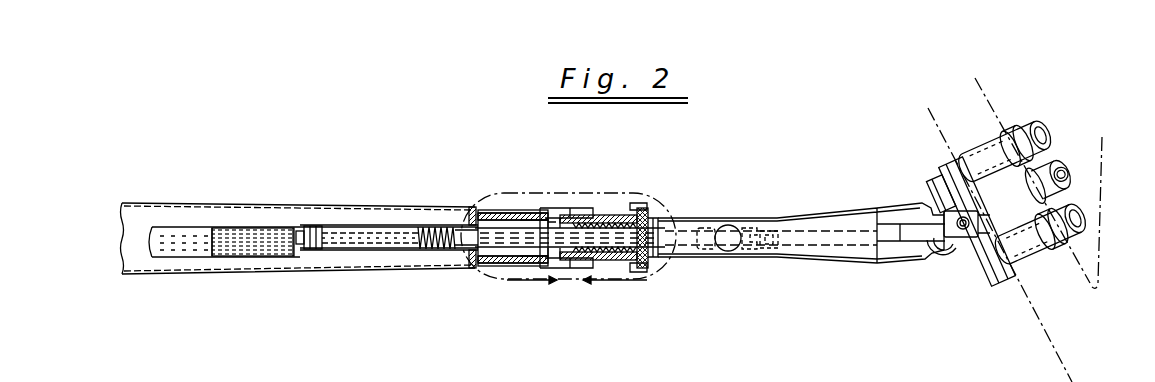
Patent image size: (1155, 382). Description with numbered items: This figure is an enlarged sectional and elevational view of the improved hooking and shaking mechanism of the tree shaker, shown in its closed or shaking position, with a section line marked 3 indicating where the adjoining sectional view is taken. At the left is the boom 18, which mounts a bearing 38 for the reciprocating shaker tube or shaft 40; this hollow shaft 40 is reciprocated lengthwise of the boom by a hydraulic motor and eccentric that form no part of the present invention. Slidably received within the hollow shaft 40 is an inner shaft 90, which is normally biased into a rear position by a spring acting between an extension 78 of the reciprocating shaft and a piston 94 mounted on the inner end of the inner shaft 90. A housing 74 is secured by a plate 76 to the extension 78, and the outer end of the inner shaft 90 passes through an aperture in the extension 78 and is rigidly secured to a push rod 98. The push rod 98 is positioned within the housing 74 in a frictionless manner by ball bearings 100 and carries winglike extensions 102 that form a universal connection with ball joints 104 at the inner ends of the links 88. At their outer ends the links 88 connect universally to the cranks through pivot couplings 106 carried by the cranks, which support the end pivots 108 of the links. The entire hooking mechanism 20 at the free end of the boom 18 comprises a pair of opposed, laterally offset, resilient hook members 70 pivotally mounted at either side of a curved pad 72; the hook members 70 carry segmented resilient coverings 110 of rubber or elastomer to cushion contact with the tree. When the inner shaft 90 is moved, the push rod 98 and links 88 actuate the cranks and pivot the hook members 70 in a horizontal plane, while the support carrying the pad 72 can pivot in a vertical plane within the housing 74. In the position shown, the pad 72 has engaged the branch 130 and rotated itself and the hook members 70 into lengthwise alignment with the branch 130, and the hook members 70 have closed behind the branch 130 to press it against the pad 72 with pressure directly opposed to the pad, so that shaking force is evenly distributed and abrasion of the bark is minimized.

The boom 18 is at (327, 205).
The shaker shaft 40 is at (188, 228).
The piston 94 is at (393, 224).
The inner shaft 90 is at (495, 230).
The bearing 38 is at (578, 212).
The extension 78 is at (612, 215).
The plate 76 is at (650, 218).
The housing 74 is at (783, 216).
The link means 88 is at (843, 235).
The ball bearings 100 is at (728, 225).
The push rod 98 is at (704, 258).
The winglike extensions 102 is at (742, 256).
The ball joints 104 is at (774, 256).
The end pivots 108 is at (931, 258).
The pivot couplings 106 is at (978, 248).
The hooking mechanism 20 is at (1015, 188).
The segmented resilient coverings 110 is at (983, 145).
The hook members 70 is at (1042, 124).
The pad 72 is at (1014, 268).
The branch 130 is at (1048, 350).
The section line 3- 3 is at (568, 252).